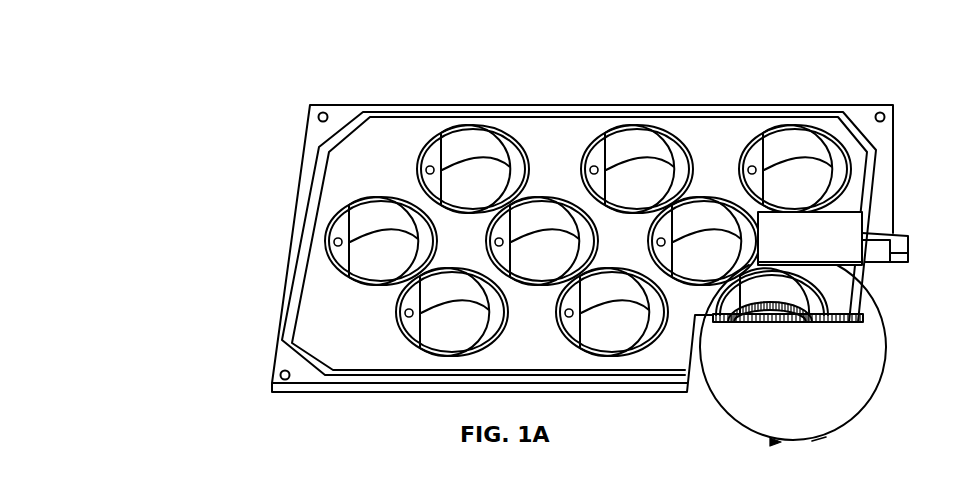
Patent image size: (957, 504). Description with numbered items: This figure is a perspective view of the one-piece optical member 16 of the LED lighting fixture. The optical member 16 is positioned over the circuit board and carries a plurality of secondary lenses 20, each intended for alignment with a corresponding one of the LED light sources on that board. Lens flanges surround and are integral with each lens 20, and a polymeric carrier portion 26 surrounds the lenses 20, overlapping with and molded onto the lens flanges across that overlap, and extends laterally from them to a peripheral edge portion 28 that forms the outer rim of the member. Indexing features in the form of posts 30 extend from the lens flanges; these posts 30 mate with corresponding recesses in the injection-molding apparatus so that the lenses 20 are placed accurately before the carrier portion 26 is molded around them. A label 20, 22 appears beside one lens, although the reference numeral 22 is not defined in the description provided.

The one-piece optical member 16 is at (537, 251).
The secondary lens 20 is at (623, 333).
The lenses 22 is at (433, 335).
The polymeric carrier portion 26 is at (350, 313).
The peripheral edge portion 28 is at (673, 104).
The post 30 is at (428, 168).